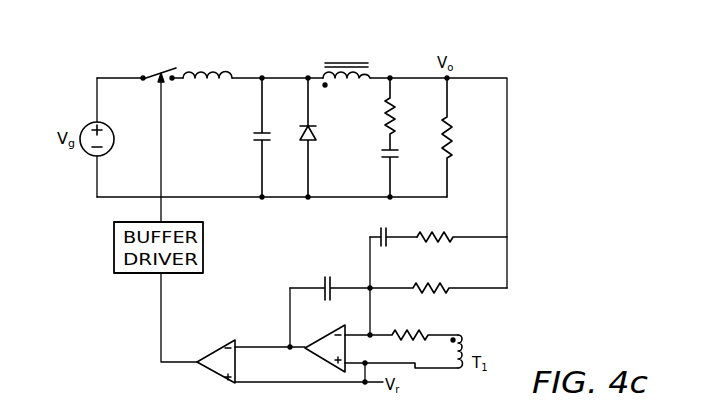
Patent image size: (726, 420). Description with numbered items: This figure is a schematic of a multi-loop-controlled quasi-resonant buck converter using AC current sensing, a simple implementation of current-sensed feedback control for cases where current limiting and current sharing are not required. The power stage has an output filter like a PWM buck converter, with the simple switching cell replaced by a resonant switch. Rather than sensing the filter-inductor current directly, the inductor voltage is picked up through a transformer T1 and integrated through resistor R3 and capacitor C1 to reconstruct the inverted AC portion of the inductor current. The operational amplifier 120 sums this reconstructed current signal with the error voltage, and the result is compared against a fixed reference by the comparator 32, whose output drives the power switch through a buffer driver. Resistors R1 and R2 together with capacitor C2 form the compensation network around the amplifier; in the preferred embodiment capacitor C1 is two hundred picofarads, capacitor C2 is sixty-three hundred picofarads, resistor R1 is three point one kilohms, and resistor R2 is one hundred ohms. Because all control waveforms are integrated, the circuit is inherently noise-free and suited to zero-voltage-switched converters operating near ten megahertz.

The comparator 32 is at (227, 342).
The operational amplifier 120 is at (318, 358).
The transformer T1 is at (357, 69).
The capacitor C1 is at (330, 277).
The capacitor C2 is at (393, 229).
The resistor R1 is at (438, 275).
The resistor R2 is at (462, 227).
The resistor R3 is at (401, 324).